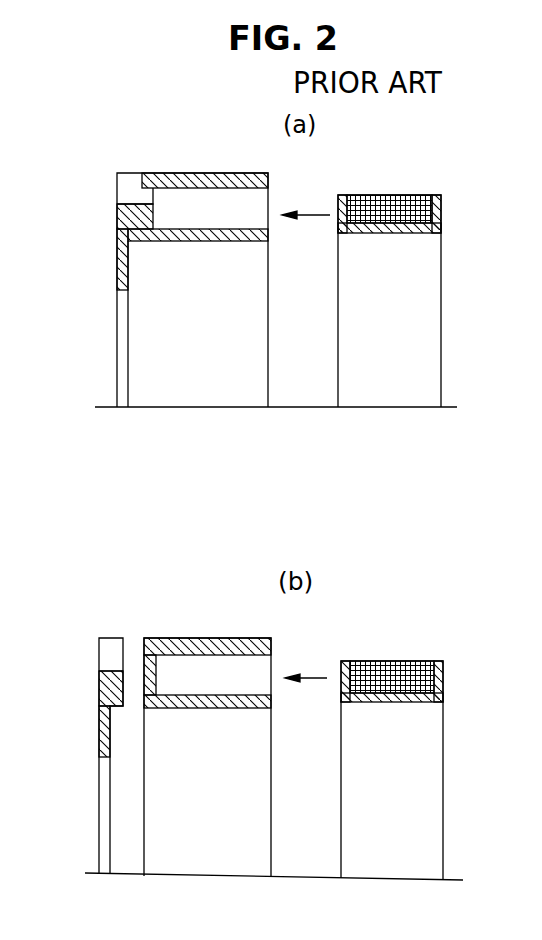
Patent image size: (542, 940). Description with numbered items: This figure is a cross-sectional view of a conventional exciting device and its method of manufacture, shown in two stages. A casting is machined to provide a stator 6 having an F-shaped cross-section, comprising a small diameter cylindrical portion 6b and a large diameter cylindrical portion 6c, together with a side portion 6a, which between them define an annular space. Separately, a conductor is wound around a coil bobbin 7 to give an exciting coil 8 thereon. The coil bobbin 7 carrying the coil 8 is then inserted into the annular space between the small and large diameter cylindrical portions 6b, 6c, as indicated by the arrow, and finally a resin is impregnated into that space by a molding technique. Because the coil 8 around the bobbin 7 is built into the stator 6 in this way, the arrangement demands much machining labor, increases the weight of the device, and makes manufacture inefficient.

The stator 6 is at (182, 173).
The side block of mould 6a is at (117, 222).
The small diameter cylindrical portion 6b is at (207, 242).
The large diameter cylindrical portion 6c is at (226, 173).
The coil bobbin 7 is at (437, 211).
The exciting coil 8 is at (395, 200).